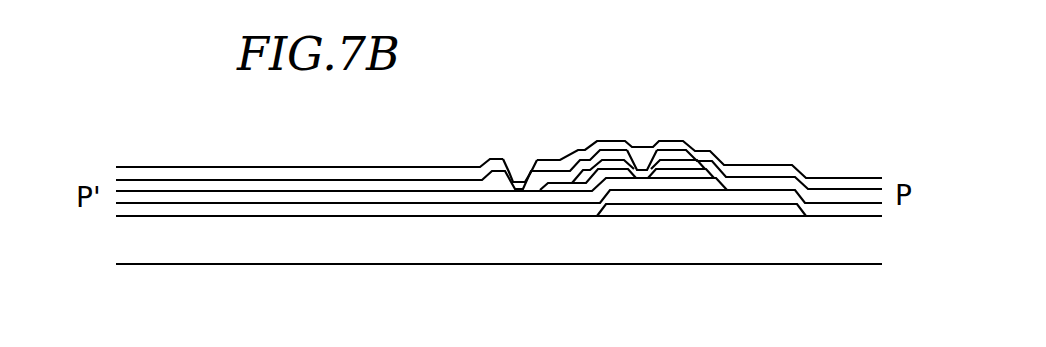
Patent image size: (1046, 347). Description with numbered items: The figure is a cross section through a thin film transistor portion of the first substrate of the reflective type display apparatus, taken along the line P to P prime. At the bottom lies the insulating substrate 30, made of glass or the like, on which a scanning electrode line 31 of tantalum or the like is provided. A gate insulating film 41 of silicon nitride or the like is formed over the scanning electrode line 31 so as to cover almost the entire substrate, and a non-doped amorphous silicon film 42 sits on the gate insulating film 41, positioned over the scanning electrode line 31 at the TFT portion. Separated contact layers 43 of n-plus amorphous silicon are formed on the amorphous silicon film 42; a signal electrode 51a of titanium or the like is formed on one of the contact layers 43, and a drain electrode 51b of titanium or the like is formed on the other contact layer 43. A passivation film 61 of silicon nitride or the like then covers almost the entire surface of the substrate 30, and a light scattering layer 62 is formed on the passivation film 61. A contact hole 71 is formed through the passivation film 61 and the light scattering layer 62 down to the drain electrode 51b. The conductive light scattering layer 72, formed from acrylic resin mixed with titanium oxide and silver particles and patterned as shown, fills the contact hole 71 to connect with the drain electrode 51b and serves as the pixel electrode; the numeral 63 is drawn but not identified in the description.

The insulating substrate 30 is at (872, 237).
The gate insulating film 41 is at (795, 207).
The non-doped amorphous silicon film 42 is at (722, 195).
The contact layers 43 is at (703, 205).
The signal electrode 51a is at (692, 168).
The drain electrode 51b is at (613, 160).
The light scattering layer 62 is at (640, 142).
The drain electrode 63 is at (518, 198).
The passivation film 61 is at (224, 190).
The contact hole 71 is at (518, 195).
The conductive light scattering layer 72 is at (278, 172).
The scanning electrode line 31 is at (646, 205).